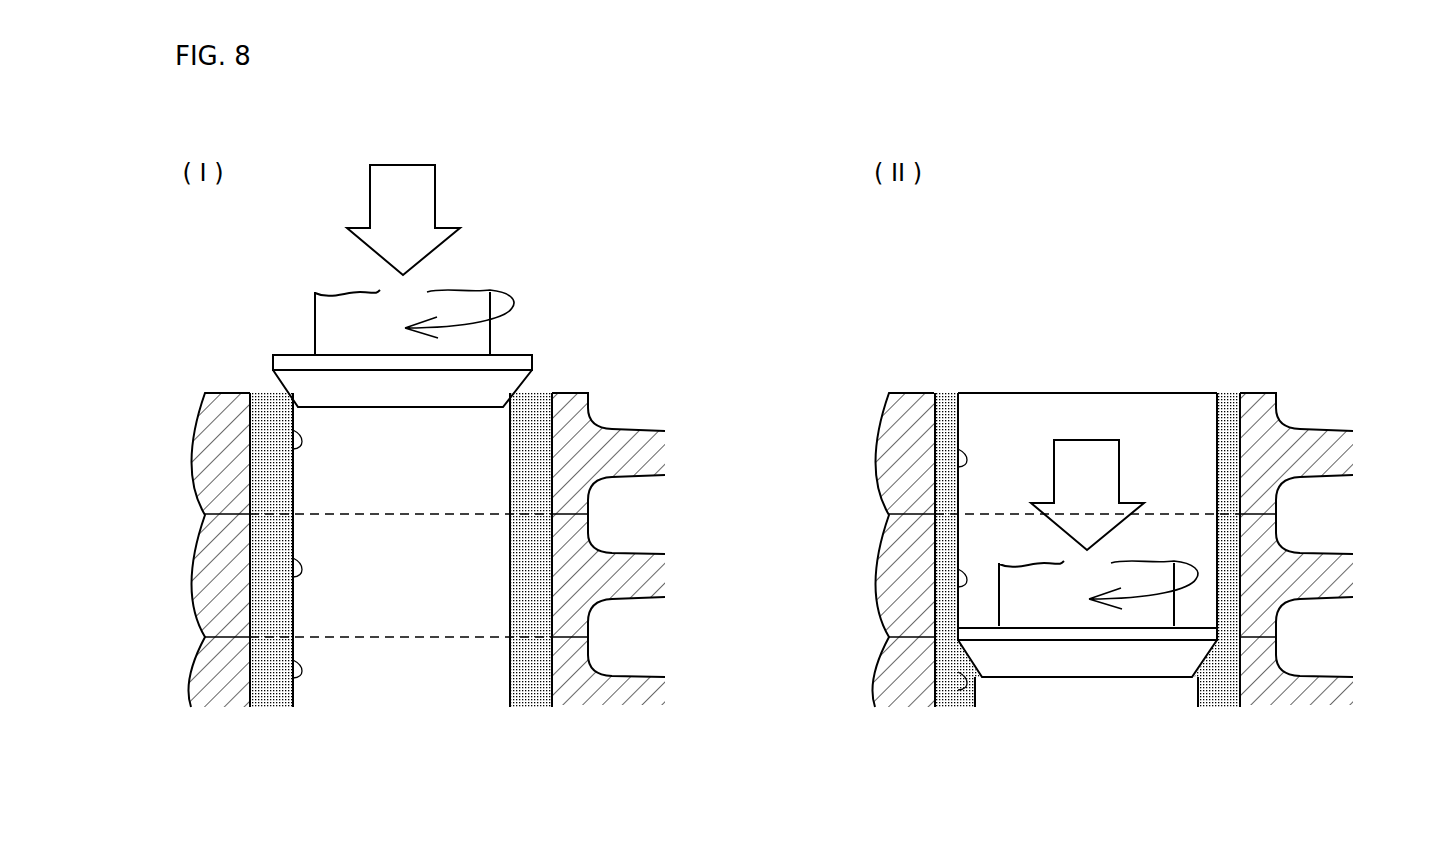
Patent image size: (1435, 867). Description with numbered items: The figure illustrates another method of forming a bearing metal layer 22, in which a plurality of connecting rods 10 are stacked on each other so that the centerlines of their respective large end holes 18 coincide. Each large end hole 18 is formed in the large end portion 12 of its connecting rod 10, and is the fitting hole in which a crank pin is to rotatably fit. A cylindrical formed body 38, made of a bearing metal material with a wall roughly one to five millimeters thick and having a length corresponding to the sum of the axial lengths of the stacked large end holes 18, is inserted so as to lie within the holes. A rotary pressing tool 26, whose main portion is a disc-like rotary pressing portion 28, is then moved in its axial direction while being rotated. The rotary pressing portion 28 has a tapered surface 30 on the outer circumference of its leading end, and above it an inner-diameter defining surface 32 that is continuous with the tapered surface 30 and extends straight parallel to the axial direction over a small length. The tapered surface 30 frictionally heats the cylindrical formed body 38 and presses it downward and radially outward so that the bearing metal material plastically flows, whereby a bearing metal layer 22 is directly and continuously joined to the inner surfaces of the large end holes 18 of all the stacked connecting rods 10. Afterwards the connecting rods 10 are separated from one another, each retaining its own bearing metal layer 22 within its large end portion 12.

The connecting rod 10 is at (653, 388).
The large end portion 12 is at (183, 458).
The large end hole 18 is at (293, 430).
The bearing metal layer 22 is at (1226, 392).
The rotary pressing tool 26 is at (524, 258).
The rotary pressing portion 28 is at (520, 343).
The tapered surface 30 is at (438, 388).
The inner-diameter defining surface 32 is at (367, 358).
The cylindrical formed body 38 is at (566, 685).